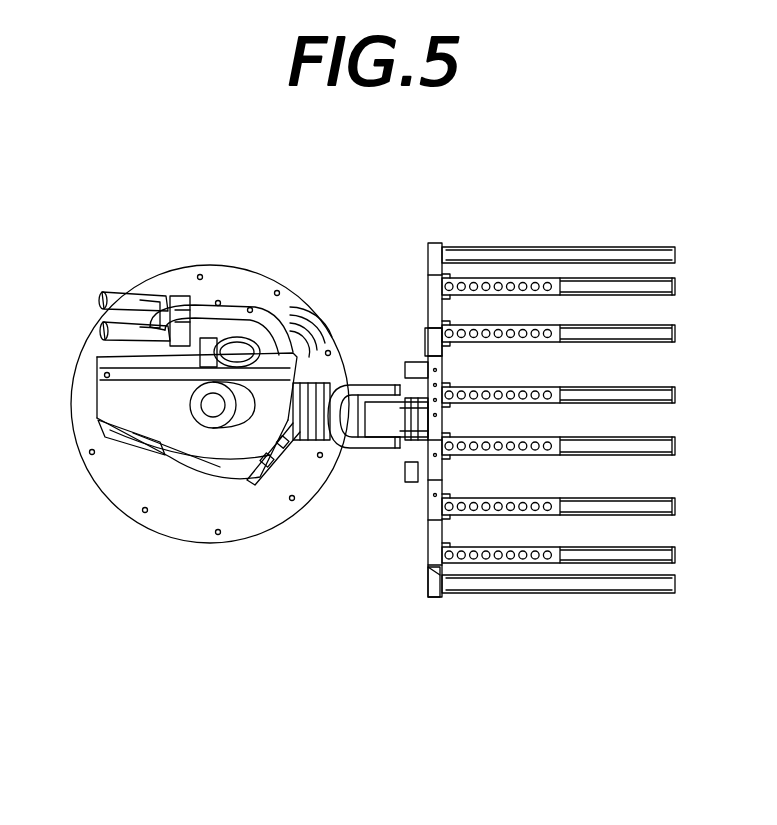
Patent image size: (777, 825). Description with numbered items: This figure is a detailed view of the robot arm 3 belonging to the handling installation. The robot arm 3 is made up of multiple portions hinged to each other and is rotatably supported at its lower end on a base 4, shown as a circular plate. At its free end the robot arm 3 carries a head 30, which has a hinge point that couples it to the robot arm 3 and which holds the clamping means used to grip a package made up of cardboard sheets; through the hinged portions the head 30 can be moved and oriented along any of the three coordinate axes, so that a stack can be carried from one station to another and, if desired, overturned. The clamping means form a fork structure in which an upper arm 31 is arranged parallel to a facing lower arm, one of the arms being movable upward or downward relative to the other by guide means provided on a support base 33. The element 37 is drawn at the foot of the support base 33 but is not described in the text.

The robot arm 3 is at (183, 203).
The base 4 is at (177, 527).
The head 30 is at (369, 453).
The upper arm 31 is at (637, 236).
The support base 33 is at (412, 335).
The bracket 37 is at (437, 560).